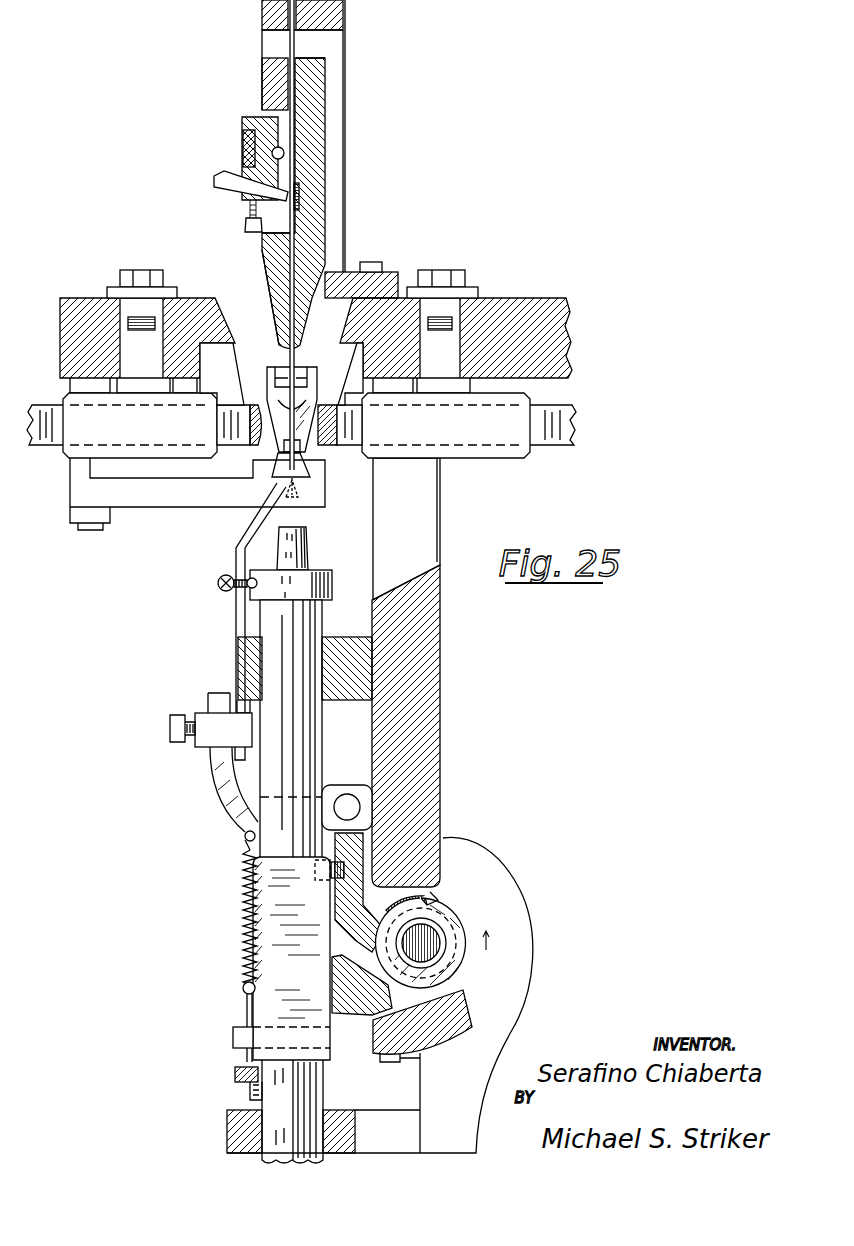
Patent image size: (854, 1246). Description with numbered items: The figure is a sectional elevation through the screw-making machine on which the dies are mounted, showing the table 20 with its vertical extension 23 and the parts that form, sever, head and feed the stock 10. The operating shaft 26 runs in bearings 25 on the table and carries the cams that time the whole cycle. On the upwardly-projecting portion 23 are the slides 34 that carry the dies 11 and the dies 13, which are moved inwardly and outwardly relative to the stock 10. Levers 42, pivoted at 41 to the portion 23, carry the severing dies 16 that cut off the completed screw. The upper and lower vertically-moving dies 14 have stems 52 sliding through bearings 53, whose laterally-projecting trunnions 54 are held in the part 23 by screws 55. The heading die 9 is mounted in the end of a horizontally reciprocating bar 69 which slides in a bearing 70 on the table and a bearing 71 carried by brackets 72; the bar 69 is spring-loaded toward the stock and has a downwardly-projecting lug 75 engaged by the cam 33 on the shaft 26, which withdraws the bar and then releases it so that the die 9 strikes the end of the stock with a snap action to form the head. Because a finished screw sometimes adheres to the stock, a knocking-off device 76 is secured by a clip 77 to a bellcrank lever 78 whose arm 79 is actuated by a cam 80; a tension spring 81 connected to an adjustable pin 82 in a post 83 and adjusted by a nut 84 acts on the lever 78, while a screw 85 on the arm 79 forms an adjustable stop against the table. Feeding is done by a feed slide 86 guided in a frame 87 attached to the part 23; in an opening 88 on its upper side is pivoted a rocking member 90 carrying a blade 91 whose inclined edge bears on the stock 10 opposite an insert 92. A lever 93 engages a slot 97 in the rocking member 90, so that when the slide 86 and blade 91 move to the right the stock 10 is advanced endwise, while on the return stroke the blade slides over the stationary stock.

The heading die 9 is at (307, 536).
The stock 10 is at (290, 42).
The dies 11 is at (281, 381).
The dies 13 is at (303, 447).
The vertically-moving dies 14 is at (225, 430).
The severing dies 16 is at (272, 472).
The table 20 is at (430, 651).
The vertical extension 23 is at (88, 306).
The bearings 25 is at (405, 898).
The operating shaft 26 is at (436, 938).
The cam 33 is at (452, 958).
The slides 34 is at (241, 389).
The pivot 41 is at (93, 528).
The levers 42 is at (139, 495).
The stems 52 is at (46, 445).
The bearings 53 is at (433, 450).
The trunnions 54 is at (290, 339).
The screws 55 is at (148, 312).
The horizontally reciprocating bar 69 is at (275, 715).
The bearing 70 is at (238, 658).
The bearing 71 is at (232, 1140).
The brackets 72 is at (490, 1010).
The lug 75 is at (362, 1000).
The knocking-off device 76 is at (264, 510).
The clip 77 is at (223, 718).
The bellcrank lever 78 is at (216, 777).
The arm 79 is at (332, 932).
The cam 80 is at (347, 975).
The tension spring 81 is at (241, 886).
The adjustable pin 82 is at (246, 1010).
The post 83 is at (234, 1037).
The nut 84 is at (235, 1075).
The screw 85 is at (342, 895).
The feed slide 86 is at (312, 150).
The frame 87 is at (346, 87).
The opening 88 is at (278, 228).
The rocking member 90 is at (273, 120).
The blade 91 is at (217, 180).
The insert 92 is at (300, 200).
The lever 93 is at (243, 150).
The slot 97 is at (242, 126).